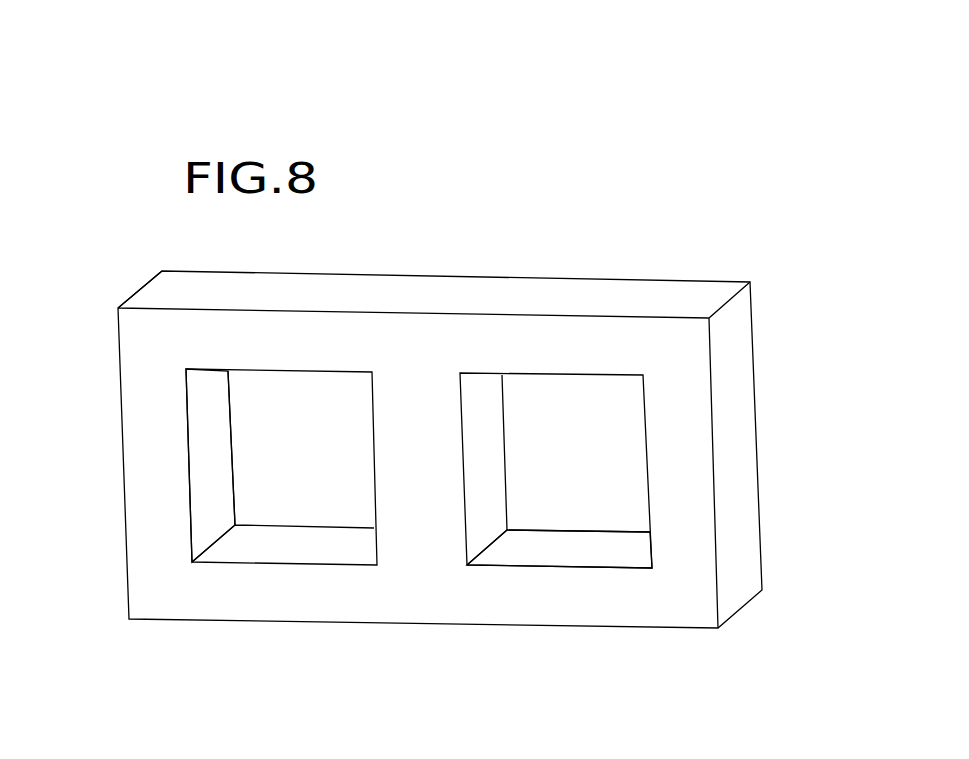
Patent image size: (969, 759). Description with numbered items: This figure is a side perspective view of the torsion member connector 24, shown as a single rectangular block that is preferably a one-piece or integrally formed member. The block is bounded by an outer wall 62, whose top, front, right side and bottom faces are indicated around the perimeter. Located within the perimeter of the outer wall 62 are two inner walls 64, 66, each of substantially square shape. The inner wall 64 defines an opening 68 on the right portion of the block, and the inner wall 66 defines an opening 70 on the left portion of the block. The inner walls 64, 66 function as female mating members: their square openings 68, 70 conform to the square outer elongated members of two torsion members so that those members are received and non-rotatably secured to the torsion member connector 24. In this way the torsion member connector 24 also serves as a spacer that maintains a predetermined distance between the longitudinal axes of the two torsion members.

The torsion member connector 24 is at (512, 218).
The outer wall 62 is at (665, 297).
The inner wall 64 is at (567, 542).
The inner wall 66 is at (215, 453).
The opening 68 is at (594, 467).
The opening 70 is at (320, 462).